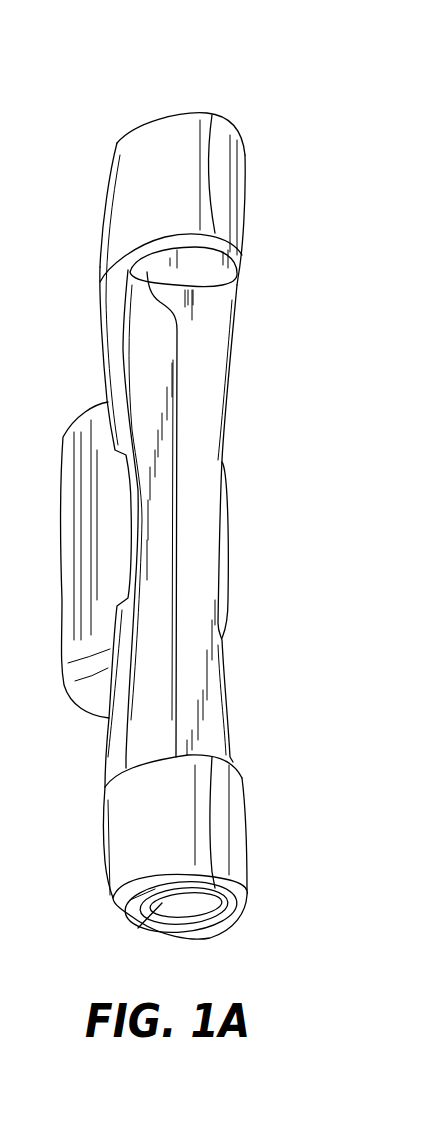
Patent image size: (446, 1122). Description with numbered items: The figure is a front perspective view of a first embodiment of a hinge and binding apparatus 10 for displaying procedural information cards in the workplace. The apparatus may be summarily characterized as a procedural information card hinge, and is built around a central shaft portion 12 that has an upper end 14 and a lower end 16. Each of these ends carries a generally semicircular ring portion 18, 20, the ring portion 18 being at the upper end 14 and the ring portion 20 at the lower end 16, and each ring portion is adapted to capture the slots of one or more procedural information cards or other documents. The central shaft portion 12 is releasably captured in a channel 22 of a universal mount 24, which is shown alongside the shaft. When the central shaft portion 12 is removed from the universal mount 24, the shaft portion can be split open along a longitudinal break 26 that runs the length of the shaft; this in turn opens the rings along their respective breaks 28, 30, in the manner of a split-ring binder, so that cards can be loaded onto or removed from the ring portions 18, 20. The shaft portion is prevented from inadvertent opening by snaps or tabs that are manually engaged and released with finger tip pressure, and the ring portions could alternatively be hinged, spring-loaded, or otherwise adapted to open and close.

The hinge and binding apparatus 10 is at (278, 880).
The central shaft portion 12 is at (102, 310).
The upper end 14 is at (117, 143).
The lower end 16 is at (142, 932).
The semicircular ring portion 18 is at (247, 158).
The semicircular ring portion 20 is at (247, 857).
The channel 22 is at (225, 472).
The universal mount 24 is at (75, 517).
The longitudinal break 26 is at (178, 403).
The break 28 is at (212, 115).
The break 30 is at (215, 816).